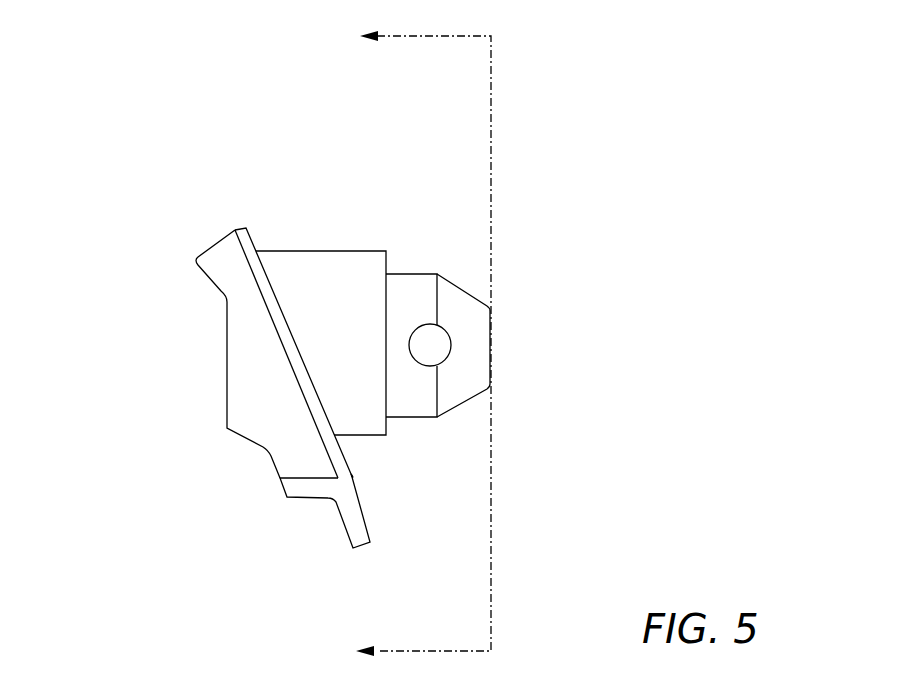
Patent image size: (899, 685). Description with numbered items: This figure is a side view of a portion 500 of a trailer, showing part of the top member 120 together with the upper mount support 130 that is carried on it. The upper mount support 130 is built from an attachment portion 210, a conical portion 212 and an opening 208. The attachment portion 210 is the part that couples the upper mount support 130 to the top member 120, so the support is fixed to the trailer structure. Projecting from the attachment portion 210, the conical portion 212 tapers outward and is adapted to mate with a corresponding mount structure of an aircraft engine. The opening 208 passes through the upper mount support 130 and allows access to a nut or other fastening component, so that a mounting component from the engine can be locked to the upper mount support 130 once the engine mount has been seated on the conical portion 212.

The portion 500 is at (144, 86).
The top member 120 is at (212, 250).
The upper mount support 130 is at (318, 158).
The attachment portion 210 is at (400, 274).
The conical portion 212 is at (467, 288).
The opening 208 is at (442, 360).